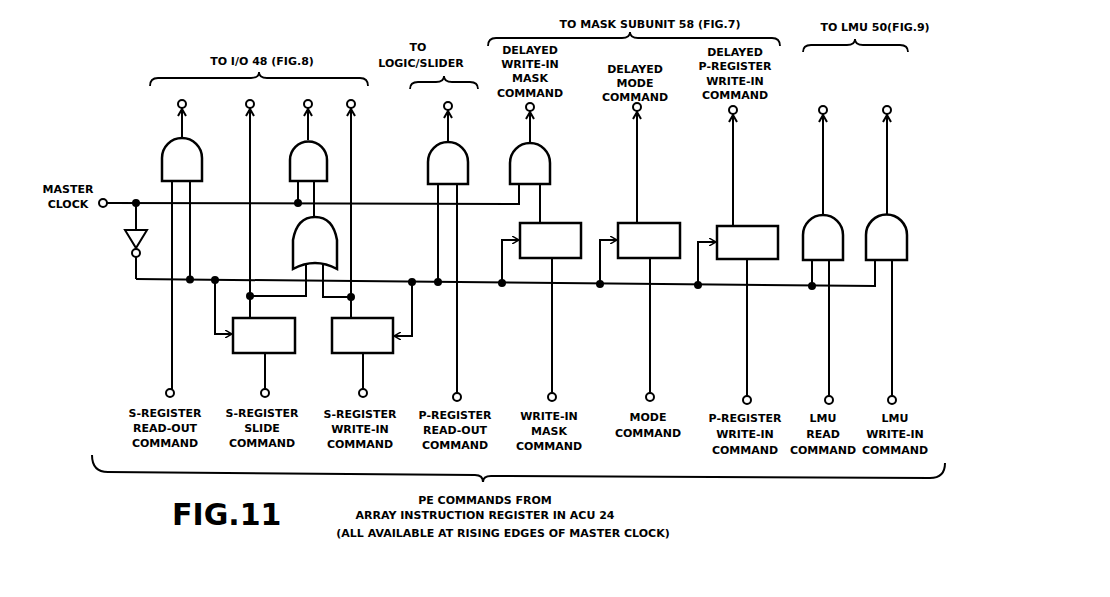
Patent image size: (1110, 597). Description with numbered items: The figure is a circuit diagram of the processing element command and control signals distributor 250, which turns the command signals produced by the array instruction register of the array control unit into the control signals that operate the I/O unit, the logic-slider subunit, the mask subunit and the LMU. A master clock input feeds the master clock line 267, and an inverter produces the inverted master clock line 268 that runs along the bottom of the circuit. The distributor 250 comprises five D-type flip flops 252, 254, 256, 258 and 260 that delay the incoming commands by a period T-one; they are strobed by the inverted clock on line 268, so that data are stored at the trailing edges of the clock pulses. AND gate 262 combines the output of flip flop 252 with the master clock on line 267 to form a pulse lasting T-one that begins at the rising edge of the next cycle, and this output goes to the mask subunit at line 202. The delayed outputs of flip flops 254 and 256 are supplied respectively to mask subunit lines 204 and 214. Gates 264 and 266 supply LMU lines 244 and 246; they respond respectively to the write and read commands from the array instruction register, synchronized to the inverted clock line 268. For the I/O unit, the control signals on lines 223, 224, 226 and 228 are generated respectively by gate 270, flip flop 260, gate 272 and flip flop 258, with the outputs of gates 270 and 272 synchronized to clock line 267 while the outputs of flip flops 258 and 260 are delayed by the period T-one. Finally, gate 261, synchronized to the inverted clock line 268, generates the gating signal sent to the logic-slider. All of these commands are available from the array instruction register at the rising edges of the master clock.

The processing element command and control signals distributor 250 is at (116, 140).
The D-type flip flop 252 is at (570, 230).
The D-type flip flop 254 is at (663, 232).
The D-type flip flop 256 is at (762, 238).
The D-type flip flop 258 is at (382, 348).
The D-type flip flop 260 is at (283, 343).
The AND gate 261 is at (440, 152).
The AND gate 262 is at (540, 160).
The AND gate 264 is at (897, 230).
The AND gate 266 is at (830, 226).
The master clock line 267 is at (157, 196).
The inverted master clock line 268 is at (770, 288).
The AND gate 270 is at (188, 154).
The AND gate 272 is at (295, 155).
The I/O unit control line 223 is at (169, 102).
The I/O unit control line 224 is at (237, 102).
The I/O unit control line 228 is at (294, 102).
The I/O unit control line 226 is at (339, 102).
The mask subunit line 202 is at (544, 110).
The mask subunit line 204 is at (652, 110).
The mask subunit line 214 is at (748, 115).
The LMU line 246 is at (838, 115).
The LMU line 244 is at (902, 115).